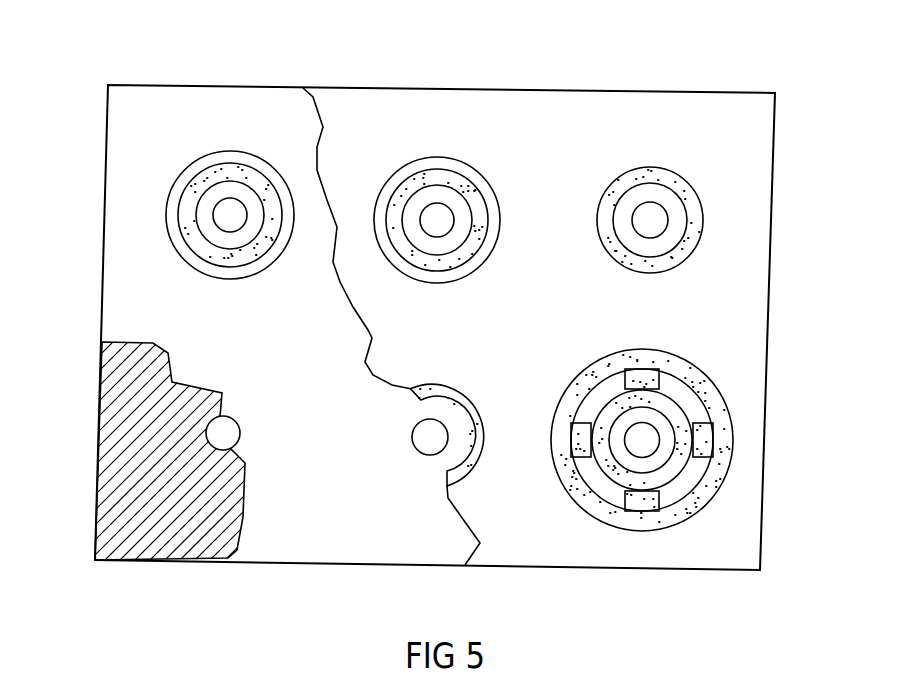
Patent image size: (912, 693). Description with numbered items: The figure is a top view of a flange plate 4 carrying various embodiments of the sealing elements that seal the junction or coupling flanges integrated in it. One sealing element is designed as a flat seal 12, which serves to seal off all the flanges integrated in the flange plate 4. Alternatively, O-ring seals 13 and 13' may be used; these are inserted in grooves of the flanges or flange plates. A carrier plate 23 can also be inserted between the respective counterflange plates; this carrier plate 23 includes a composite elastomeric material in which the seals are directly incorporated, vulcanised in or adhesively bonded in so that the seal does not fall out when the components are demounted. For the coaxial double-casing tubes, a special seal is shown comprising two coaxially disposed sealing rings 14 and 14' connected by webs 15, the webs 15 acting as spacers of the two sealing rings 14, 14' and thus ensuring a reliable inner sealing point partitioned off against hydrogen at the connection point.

The flange plate 4 is at (328, 527).
The flat seal 12 is at (120, 427).
The O-ring seal 13 is at (333, 164).
The O-ring seal 13' is at (336, 160).
The sealing ring 14 is at (681, 480).
The sealing ring 14' is at (702, 453).
The web 15 is at (640, 510).
The carrier plate 23 is at (683, 138).